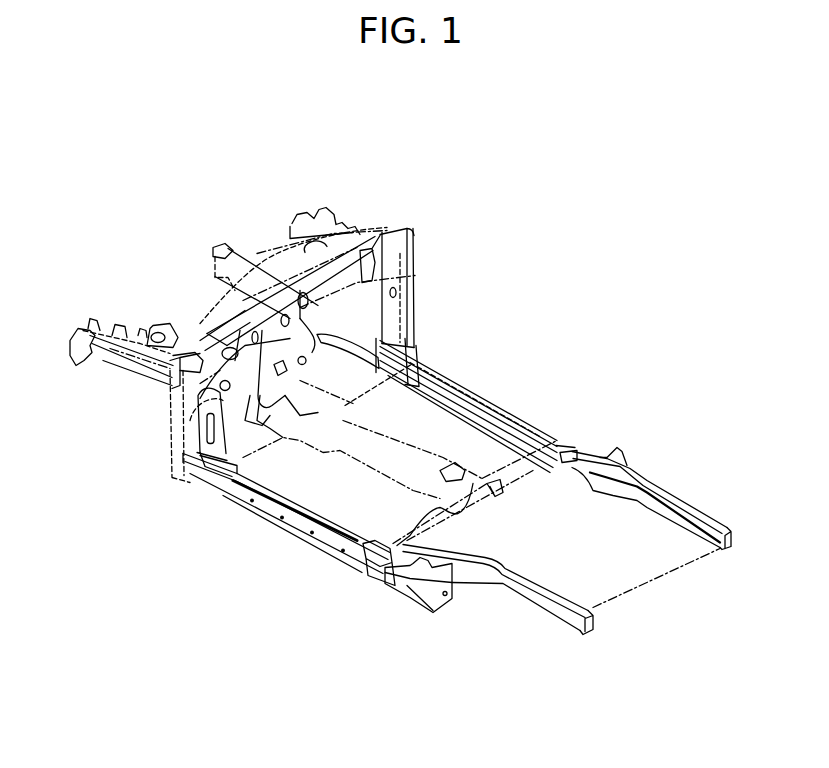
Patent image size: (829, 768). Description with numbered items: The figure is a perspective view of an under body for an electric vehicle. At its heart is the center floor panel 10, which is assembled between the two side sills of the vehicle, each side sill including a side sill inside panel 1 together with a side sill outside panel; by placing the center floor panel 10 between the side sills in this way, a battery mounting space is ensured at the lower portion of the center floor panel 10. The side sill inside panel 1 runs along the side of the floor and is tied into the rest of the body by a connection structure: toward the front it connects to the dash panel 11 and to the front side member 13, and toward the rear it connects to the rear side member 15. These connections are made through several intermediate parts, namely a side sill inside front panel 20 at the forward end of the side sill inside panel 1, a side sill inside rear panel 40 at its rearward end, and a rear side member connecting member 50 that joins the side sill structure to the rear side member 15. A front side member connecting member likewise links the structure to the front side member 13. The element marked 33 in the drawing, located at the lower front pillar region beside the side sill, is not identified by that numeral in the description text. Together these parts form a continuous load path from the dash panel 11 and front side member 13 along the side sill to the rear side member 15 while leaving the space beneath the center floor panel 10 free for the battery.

The side sill inside panel 1 is at (448, 377).
The center floor panel 10 is at (330, 500).
The dash panel 11 is at (364, 276).
The front side member 13 is at (213, 248).
The rear side member 15 is at (668, 490).
The side sill inside front panel 20 is at (408, 340).
The front pillar lower 33 is at (197, 428).
The side sill inside rear panel 40 is at (587, 446).
The rear side member connecting member 50 is at (553, 442).